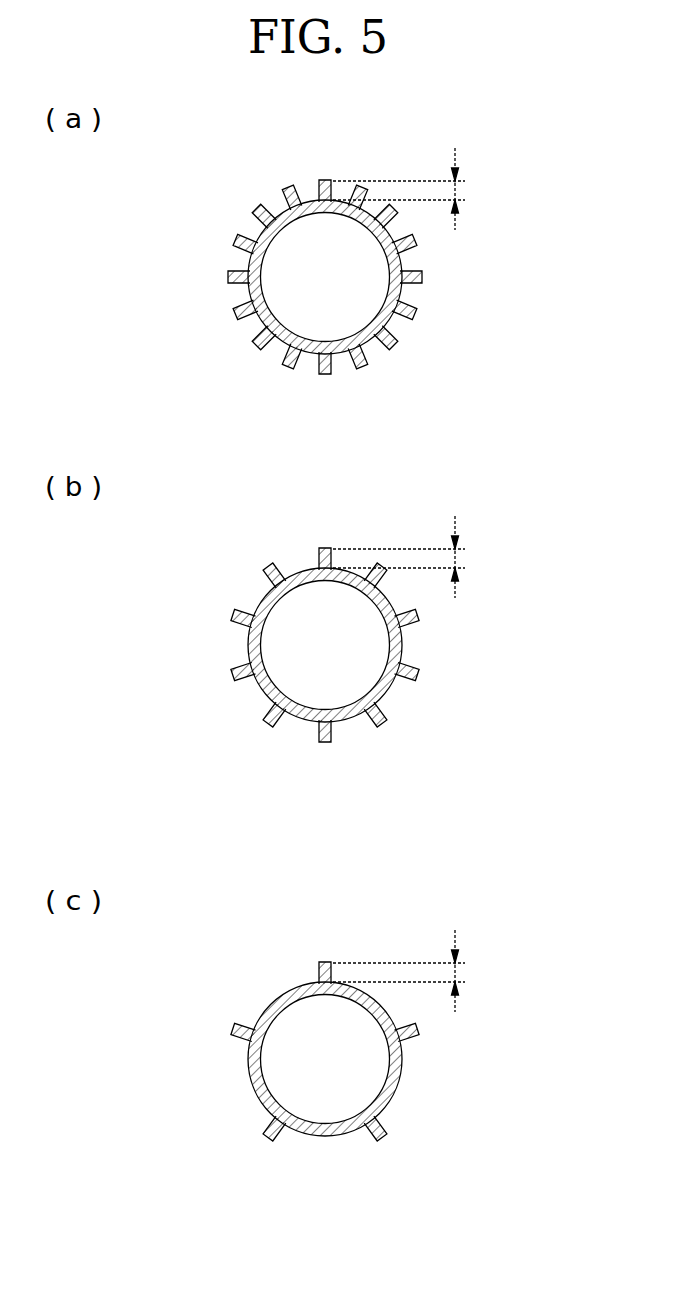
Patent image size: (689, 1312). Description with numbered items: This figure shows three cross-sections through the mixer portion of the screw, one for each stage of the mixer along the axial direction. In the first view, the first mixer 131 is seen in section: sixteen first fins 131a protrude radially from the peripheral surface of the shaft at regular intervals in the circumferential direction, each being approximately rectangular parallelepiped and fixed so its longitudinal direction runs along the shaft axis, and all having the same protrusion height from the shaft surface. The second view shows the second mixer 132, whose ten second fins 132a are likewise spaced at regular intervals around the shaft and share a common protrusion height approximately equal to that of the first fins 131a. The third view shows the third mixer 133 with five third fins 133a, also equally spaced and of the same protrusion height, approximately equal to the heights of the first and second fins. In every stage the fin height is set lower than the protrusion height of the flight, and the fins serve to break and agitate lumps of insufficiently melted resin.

The first mixer 131 is at (412, 356).
The first fin 131a is at (325, 181).
The second mixer 132 is at (399, 621).
The second fin 132a is at (326, 528).
The third mixer 133 is at (400, 1023).
The third fin 133a is at (326, 942).